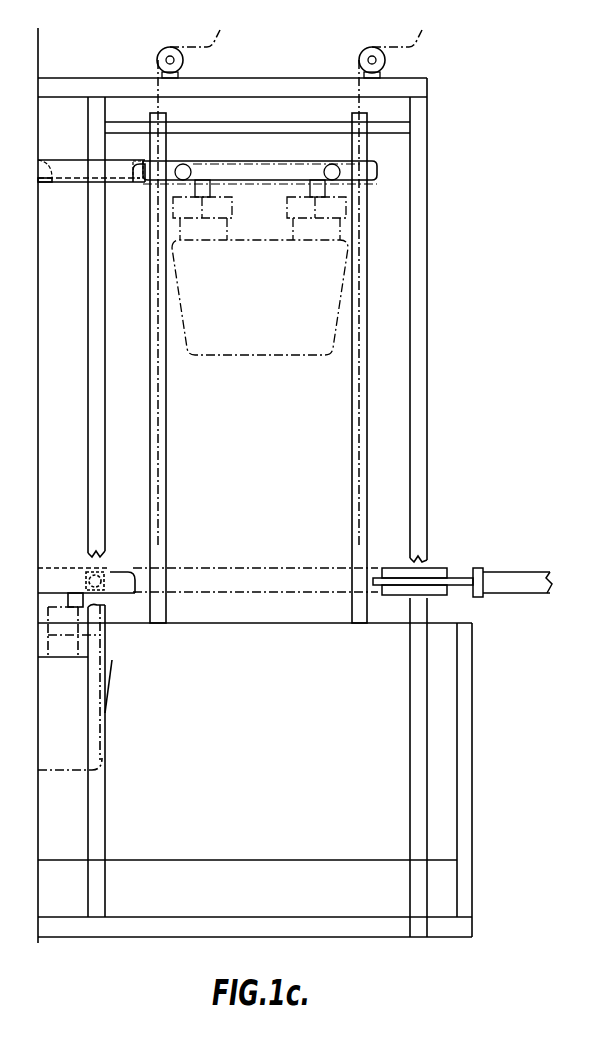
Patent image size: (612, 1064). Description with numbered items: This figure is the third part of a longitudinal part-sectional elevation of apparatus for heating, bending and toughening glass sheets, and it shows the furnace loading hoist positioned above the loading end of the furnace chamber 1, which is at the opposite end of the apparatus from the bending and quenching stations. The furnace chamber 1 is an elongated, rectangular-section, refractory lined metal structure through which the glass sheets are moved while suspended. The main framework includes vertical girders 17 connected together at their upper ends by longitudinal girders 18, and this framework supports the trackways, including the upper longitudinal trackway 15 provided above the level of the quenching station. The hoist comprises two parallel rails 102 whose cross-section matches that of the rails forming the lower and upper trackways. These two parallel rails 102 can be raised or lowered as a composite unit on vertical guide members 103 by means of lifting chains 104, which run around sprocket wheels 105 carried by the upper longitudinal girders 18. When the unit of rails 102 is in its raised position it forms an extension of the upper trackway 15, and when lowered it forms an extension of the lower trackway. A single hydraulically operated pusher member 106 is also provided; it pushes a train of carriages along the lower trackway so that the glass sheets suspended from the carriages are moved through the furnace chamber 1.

The furnace chamber 1 is at (446, 673).
The upper longitudinal trackway 15 is at (64, 158).
The vertical girders 17 is at (418, 366).
The longitudinal girders 18 is at (131, 80).
The parallel rails 102 is at (378, 164).
The vertical guide members 103 is at (154, 338).
The lifting chains 104 is at (356, 146).
The sprocket wheels 105 is at (175, 60).
The hydraulically operated pusher member 106 is at (463, 580).